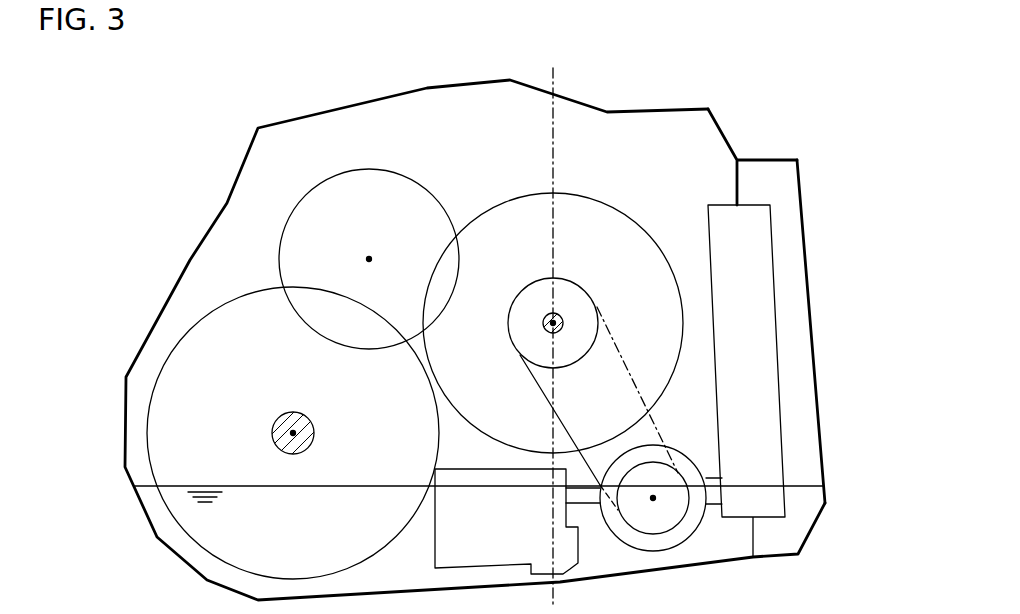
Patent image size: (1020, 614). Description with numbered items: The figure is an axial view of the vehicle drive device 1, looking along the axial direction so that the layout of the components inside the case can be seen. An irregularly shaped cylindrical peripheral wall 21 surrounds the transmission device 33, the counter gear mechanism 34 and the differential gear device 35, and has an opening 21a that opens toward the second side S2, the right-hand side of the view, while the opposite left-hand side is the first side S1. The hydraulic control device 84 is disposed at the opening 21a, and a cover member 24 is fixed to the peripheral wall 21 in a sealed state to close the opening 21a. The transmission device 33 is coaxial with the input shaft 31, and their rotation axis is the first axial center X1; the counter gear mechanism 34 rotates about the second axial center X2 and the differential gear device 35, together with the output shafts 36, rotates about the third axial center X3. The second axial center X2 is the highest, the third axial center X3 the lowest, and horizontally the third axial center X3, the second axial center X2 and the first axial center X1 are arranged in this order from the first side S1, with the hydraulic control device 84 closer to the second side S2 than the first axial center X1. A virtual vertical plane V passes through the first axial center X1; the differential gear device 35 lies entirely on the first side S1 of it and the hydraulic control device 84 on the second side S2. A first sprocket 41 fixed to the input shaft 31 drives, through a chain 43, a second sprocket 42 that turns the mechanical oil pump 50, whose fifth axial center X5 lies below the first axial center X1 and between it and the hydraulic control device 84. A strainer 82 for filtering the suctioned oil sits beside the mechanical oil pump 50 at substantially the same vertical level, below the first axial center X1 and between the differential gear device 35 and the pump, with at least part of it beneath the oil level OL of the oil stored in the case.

The vehicle drive device 1 is at (167, 172).
The peripheral wall 21 is at (300, 114).
The opening 21a is at (722, 184).
The cover member 24 is at (800, 182).
The input shaft 31 is at (556, 317).
The transmission device 33 is at (595, 208).
The counter gear mechanism 34 is at (395, 182).
The differential gear device 35 is at (207, 325).
The output shafts 36 is at (272, 433).
The first sprocket 41 is at (588, 337).
The second sprocket 42 is at (657, 465).
The chain 43 is at (680, 370).
The mechanical oil pump 50 is at (692, 528).
The strainer 82 is at (488, 472).
The hydraulic control device 84 is at (772, 275).
The vertical plane V is at (552, 324).
The oil level OL is at (198, 484).
The first side S1 is at (103, 320).
The second side S2 is at (881, 320).
The first axial center X1 is at (553, 323).
The second axial center X2 is at (369, 259).
The third axial center X3 is at (296, 436).
The fifth axial center X5 is at (653, 498).